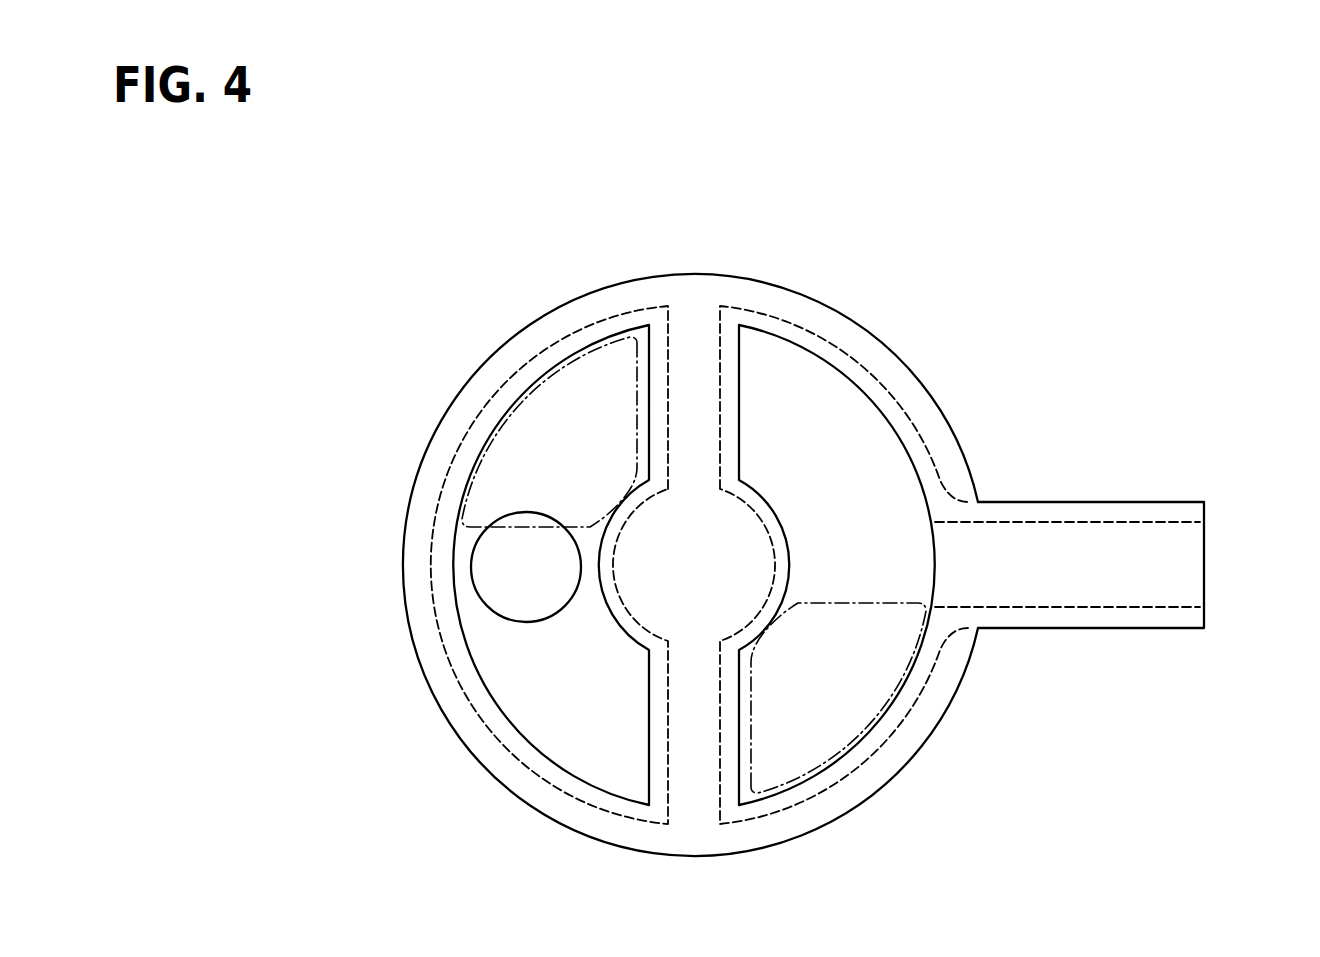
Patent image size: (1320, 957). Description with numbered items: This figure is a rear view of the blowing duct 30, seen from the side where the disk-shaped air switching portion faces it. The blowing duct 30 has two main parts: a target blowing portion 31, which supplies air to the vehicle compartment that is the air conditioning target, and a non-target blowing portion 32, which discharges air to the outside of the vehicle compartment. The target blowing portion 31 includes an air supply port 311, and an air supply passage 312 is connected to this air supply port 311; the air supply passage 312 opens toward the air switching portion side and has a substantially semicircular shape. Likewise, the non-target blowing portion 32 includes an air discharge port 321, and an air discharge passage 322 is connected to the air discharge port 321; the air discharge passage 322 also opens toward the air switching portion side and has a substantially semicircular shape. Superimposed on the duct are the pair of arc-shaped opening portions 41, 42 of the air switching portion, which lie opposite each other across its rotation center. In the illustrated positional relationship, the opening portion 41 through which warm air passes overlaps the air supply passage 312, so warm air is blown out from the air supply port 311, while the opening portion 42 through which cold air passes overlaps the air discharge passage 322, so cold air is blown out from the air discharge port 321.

The blowing duct 30 is at (840, 240).
The target blowing portion 31 is at (572, 333).
The air supply port 311 is at (473, 592).
The air supply passage 312 is at (522, 723).
The non-target blowing portion 32 is at (848, 350).
The air discharge port 321 is at (1207, 566).
The air discharge passage 322 is at (875, 413).
The opening portion 41 is at (515, 412).
The opening portion 42 is at (882, 707).